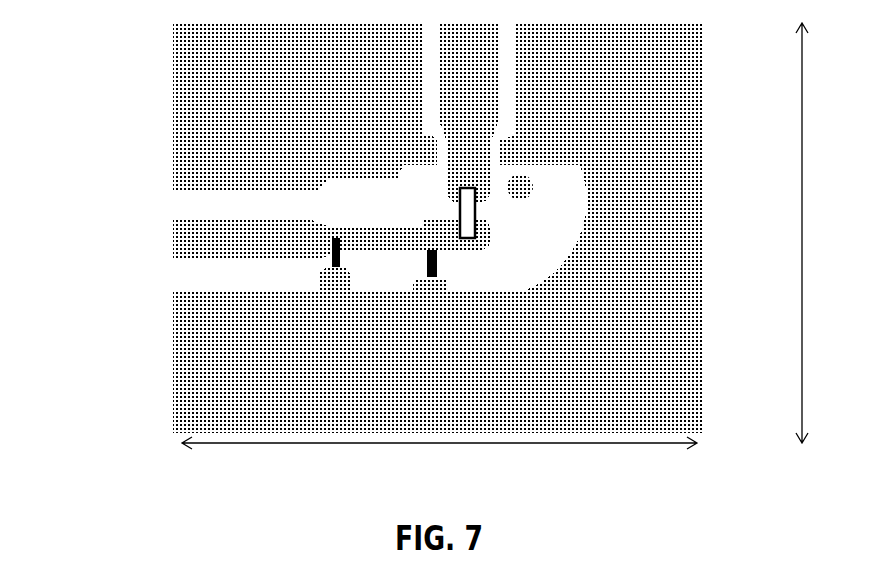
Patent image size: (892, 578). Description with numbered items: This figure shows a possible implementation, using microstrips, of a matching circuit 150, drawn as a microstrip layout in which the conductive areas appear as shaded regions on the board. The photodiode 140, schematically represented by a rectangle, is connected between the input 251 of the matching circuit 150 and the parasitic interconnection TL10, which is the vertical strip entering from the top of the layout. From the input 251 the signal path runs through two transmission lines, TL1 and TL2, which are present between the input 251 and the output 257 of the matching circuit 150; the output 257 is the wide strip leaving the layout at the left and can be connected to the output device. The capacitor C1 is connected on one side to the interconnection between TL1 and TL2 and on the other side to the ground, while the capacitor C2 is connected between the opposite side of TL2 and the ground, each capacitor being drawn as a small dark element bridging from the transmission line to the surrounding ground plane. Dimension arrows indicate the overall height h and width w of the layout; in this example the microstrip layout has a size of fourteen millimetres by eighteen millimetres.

The matching circuit 150 is at (416, 227).
The output 257 is at (182, 238).
The transmission line TL2 is at (390, 240).
The transmission line TL1 is at (445, 248).
The parasitic interconnection TL10 is at (473, 165).
The capacitor C2 is at (332, 255).
The capacitor C1 is at (427, 263).
The photodiode 140 is at (475, 215).
The input 251 is at (467, 245).
The width w is at (439, 455).
The height h is at (814, 233).